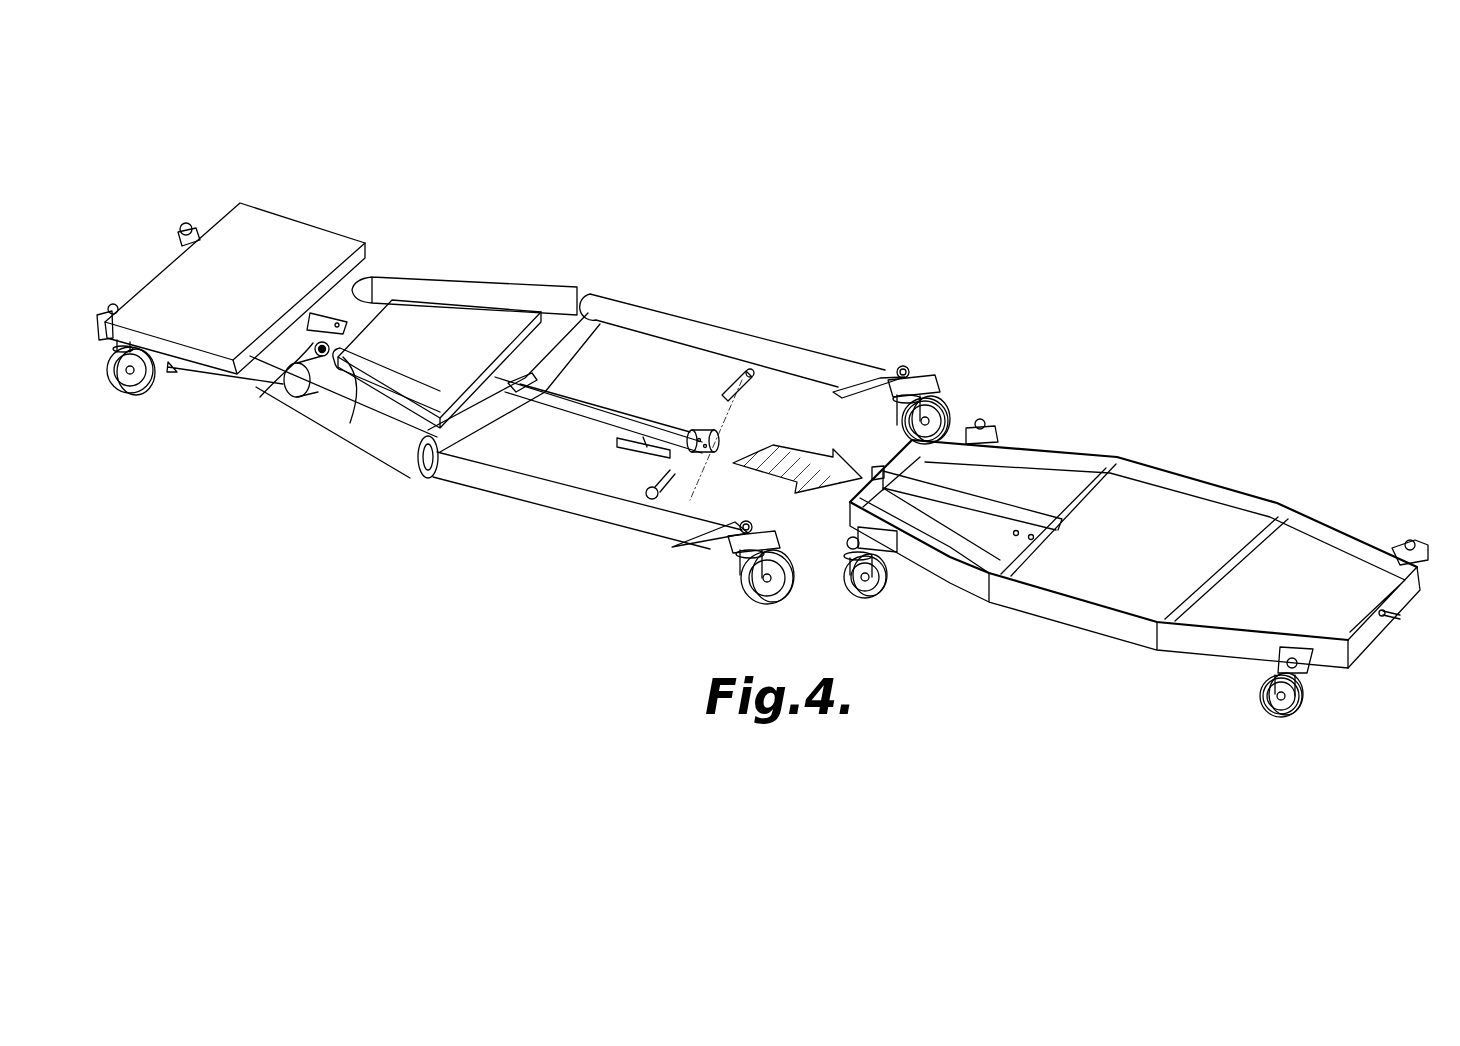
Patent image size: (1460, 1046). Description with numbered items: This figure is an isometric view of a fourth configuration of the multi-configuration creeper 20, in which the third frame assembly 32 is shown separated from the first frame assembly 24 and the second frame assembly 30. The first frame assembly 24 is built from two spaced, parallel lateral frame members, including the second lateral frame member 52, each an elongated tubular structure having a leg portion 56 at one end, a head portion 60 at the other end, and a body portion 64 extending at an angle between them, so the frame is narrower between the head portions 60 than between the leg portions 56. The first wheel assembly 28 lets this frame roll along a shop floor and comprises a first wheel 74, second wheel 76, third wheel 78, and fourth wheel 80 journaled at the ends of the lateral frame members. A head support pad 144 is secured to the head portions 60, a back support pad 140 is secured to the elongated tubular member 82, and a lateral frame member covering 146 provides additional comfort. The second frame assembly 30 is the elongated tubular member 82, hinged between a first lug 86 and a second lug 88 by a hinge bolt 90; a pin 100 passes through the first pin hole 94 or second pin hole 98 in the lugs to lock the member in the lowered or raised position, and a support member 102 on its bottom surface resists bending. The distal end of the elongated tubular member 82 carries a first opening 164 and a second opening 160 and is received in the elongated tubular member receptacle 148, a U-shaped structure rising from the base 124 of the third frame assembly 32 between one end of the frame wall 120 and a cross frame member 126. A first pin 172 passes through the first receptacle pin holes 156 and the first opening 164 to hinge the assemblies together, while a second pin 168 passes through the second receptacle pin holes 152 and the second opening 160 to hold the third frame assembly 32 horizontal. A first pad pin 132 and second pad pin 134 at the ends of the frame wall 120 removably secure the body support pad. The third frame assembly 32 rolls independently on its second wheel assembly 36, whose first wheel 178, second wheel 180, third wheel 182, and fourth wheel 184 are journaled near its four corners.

The multi-configuration creeper 20 is at (835, 438).
The first frame assembly 24 is at (577, 408).
The first wheel assembly 28 is at (940, 377).
The second frame assembly 30 is at (626, 394).
The third frame assembly 32 is at (1132, 556).
The second wheel assembly 36 is at (1313, 713).
The second lateral frame member 52 is at (705, 318).
The leg portion 56 is at (583, 508).
The head portion 60 is at (252, 379).
The body portion 64 is at (420, 462).
The first wheel 74 is at (745, 593).
The second wheel 76 is at (130, 394).
The third wheel 78 is at (948, 410).
The fourth wheel 80 is at (195, 222).
The elongated tubular member 82 is at (605, 410).
The first lug 86 is at (297, 366).
The second lug 88 is at (345, 323).
The hinge bolt 90 is at (322, 357).
The first pin hole 94 is at (313, 333).
The second pin hole 98 is at (316, 330).
The pin 100 is at (350, 423).
The support member 102 is at (624, 443).
The frame wall 120 is at (1172, 462).
The base 124 is at (1122, 594).
The cross frame member 126 is at (1105, 483).
The first pad pin 132 is at (876, 468).
The second pad pin 134 is at (1392, 615).
The back support pad 140 is at (440, 335).
The head support pad 144 is at (268, 232).
The lateral frame member covering 146 is at (495, 290).
The elongated tubular member receptacle 148 is at (1010, 508).
The second receptacle pin hole 152 is at (1016, 536).
The first receptacle pin hole 156 is at (1031, 540).
The second opening 160 is at (694, 432).
The first opening 164 is at (702, 448).
The second pin 168 is at (745, 375).
The first pin 172 is at (665, 493).
The first wheel 178 is at (1288, 715).
The second wheel 180 is at (862, 592).
The third wheel 182 is at (1418, 552).
The fourth wheel 184 is at (987, 420).